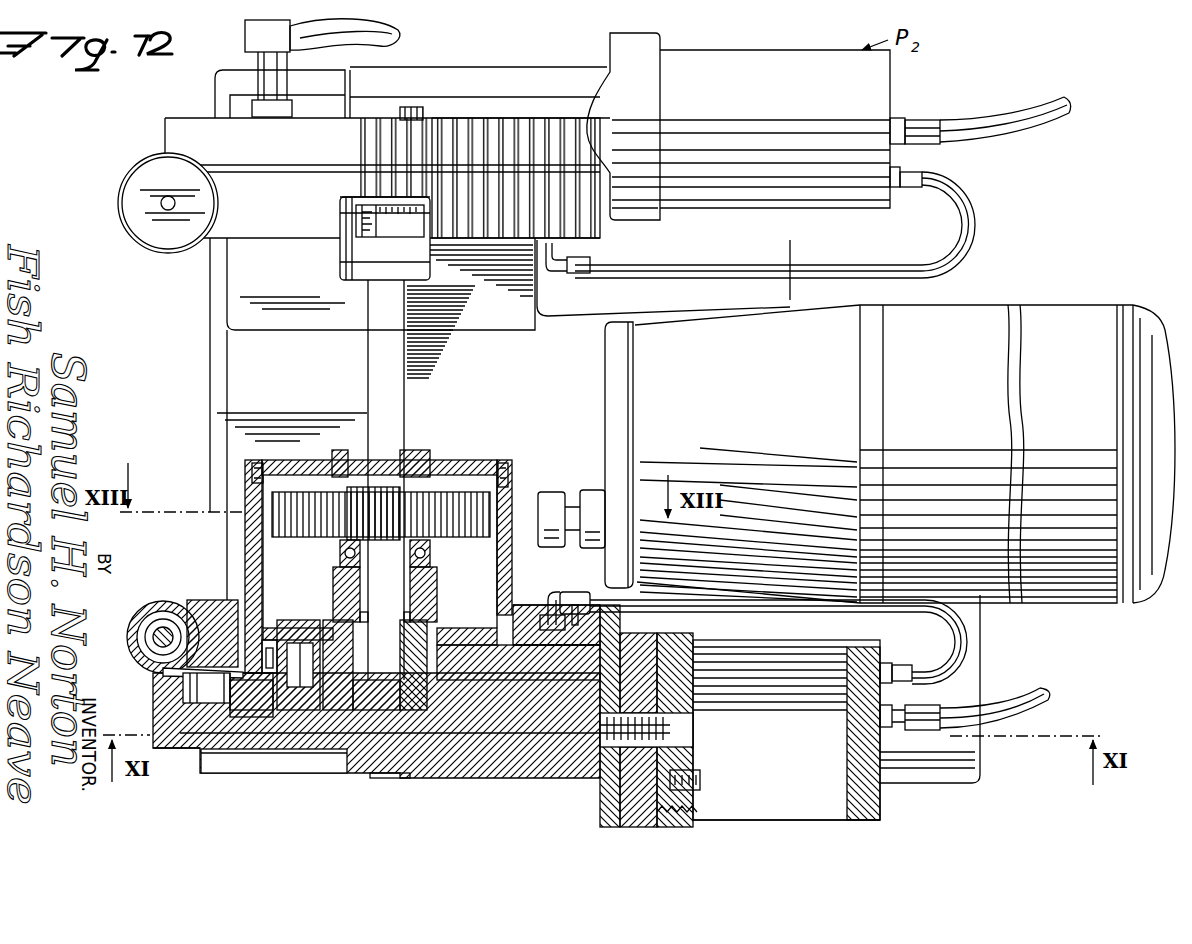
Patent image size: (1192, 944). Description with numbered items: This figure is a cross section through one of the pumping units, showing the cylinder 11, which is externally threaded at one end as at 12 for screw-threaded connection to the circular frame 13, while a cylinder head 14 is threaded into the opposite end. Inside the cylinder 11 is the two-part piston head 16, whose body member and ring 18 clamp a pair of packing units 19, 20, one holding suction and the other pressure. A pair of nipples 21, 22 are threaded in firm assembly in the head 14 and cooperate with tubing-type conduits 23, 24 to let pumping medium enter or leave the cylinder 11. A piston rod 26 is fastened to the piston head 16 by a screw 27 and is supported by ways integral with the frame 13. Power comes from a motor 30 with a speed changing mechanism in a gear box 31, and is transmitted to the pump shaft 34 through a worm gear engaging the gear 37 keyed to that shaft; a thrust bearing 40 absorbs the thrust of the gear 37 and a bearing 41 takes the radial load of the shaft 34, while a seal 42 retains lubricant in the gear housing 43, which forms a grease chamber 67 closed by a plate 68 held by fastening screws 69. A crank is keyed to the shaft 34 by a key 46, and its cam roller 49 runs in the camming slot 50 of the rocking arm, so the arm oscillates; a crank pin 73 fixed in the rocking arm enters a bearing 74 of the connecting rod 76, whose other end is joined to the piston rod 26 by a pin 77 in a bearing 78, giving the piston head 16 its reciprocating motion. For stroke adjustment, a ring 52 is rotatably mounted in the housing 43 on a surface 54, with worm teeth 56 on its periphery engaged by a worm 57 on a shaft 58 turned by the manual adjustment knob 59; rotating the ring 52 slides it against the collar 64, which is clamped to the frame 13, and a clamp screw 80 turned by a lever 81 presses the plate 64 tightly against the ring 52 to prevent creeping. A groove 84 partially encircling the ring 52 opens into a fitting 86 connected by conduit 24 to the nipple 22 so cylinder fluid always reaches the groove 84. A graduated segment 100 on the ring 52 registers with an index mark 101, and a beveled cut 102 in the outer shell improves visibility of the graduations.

The cylinder 11 is at (820, 48).
The external threads 12 is at (668, 655).
The circular frame 13 is at (632, 635).
The cylinder head 14 is at (868, 790).
The piston head 16 is at (705, 760).
The ring 18 is at (700, 800).
The packing unit 19 is at (660, 818).
The packing unit 20 is at (700, 815).
The nipple 21 is at (898, 120).
The nipple 22 is at (898, 170).
The tubing-type conduit 23 is at (995, 118).
The tubing-type conduit 24 is at (968, 220).
The piston rod 26 is at (522, 750).
The screw 27 is at (690, 742).
The motor 30 is at (1092, 308).
The gear box 31 is at (790, 318).
The pump shaft 34 is at (408, 412).
The gear 37 is at (480, 545).
The thrust bearing 40 is at (340, 553).
The bearing 41 is at (335, 592).
The seal 42 is at (350, 456).
The housing 43 is at (250, 485).
The key 46 is at (335, 620).
The cam roller 49 is at (298, 705).
The camming slot 50 is at (325, 700).
The ring 52 is at (382, 207).
The surface 54 is at (238, 600).
The worm teeth 56 is at (185, 618).
The worm 57 is at (140, 625).
The shaft 58 is at (166, 203).
The manual adjustment knob 59 is at (148, 222).
The collar 64 is at (548, 680).
The grease chamber 67 is at (480, 490).
The plate 68 is at (455, 465).
The fastening screws 69 is at (258, 462).
The crank pin 73 is at (222, 742).
The bearing 74 is at (193, 745).
The connecting rod 76 is at (292, 735).
The pin 77 is at (395, 782).
The bearing 78 is at (418, 762).
The clamp screw 80 is at (266, 78).
The lever 81 is at (400, 36).
The groove 84 is at (543, 620).
The fitting 86 is at (555, 595).
The graduated segment 100 is at (368, 222).
The index mark 101 is at (357, 246).
The beveled cut 102 is at (422, 228).